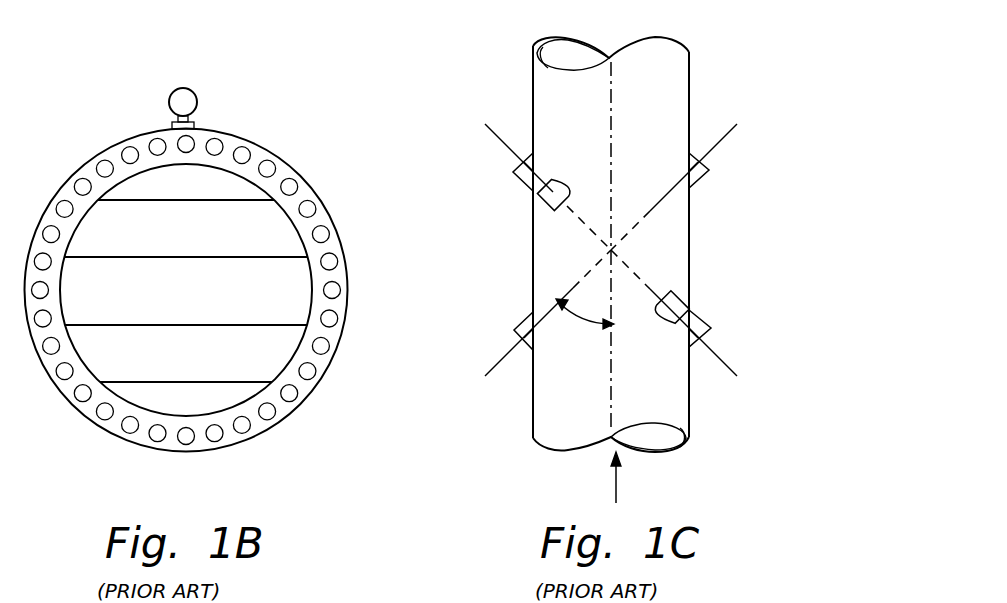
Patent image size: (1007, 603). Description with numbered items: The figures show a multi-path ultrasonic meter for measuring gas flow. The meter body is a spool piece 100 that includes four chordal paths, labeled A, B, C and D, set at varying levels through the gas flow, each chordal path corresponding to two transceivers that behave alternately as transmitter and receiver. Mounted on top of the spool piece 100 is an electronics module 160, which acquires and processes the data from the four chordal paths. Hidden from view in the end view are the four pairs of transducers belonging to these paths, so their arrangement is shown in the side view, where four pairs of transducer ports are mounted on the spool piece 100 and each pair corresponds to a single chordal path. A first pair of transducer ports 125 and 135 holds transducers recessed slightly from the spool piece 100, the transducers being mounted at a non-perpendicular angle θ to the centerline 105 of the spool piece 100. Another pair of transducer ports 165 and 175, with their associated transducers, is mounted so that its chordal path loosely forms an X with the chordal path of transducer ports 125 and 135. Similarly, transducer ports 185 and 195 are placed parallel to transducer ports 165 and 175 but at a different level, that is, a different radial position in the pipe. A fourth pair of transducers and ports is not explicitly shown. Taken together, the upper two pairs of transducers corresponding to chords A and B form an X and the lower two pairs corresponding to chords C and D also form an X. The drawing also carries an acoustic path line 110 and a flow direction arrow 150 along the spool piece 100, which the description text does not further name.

In FIG. 1B, the spool piece 100 is at (296, 170).
In FIG. 1C, the spool piece 100 is at (690, 83).
In FIG. 1B, the electronics module 160 is at (193, 90).
In FIG. 1C, the centerline 105 is at (612, 97).
In FIG. 1C, the acoustic path 110 is at (672, 190).
In FIG. 1C, the transducer port 125 is at (698, 186).
In FIG. 1C, the transducer port 135 is at (522, 318).
In FIG. 1C, the flow direction arrow 150 is at (618, 480).
In FIG. 1C, the transducer port 165 is at (517, 185).
In FIG. 1C, the transducer port 175 is at (700, 314).
In FIG. 1C, the transducer port 185 is at (559, 178).
In FIG. 1C, the transducer port 195 is at (667, 322).